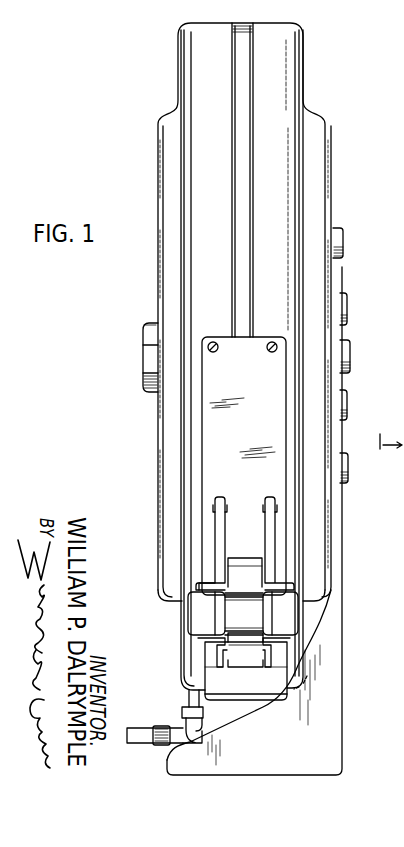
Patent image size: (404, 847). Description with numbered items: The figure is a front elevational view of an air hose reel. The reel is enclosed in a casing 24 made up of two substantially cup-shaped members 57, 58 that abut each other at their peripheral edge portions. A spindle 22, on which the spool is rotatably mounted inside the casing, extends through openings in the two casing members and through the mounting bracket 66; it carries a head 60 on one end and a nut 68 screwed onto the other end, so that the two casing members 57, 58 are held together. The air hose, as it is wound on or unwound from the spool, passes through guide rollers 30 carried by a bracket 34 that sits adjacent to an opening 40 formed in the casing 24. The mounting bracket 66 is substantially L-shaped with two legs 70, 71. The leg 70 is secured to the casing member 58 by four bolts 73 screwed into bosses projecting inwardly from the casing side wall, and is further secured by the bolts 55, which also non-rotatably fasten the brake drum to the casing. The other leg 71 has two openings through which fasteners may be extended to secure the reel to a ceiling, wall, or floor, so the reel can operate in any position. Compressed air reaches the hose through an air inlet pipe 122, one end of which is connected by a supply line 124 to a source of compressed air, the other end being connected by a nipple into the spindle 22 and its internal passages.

The spindle 22 is at (142, 352).
The casing 24 is at (283, 63).
The guide rollers 30 is at (248, 572).
The bracket 34 is at (204, 655).
The opening 40 is at (245, 615).
The bolts 55 is at (344, 240).
The cup-shaped casing member 57 is at (177, 79).
The cup-shaped casing member 58 is at (280, 98).
The head 60 is at (145, 333).
The mounting bracket 66 is at (324, 647).
The nut 68 is at (346, 357).
The leg 70 is at (329, 706).
The leg 71 is at (188, 768).
The bolts 73 is at (346, 307).
The air inlet pipe 122 is at (191, 694).
The supply line 124 is at (140, 732).